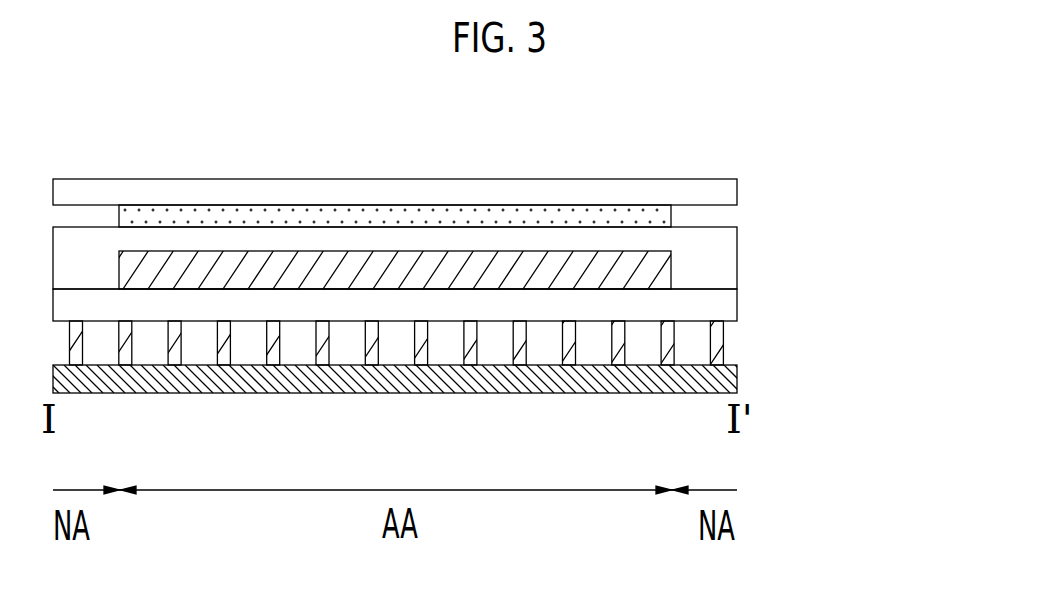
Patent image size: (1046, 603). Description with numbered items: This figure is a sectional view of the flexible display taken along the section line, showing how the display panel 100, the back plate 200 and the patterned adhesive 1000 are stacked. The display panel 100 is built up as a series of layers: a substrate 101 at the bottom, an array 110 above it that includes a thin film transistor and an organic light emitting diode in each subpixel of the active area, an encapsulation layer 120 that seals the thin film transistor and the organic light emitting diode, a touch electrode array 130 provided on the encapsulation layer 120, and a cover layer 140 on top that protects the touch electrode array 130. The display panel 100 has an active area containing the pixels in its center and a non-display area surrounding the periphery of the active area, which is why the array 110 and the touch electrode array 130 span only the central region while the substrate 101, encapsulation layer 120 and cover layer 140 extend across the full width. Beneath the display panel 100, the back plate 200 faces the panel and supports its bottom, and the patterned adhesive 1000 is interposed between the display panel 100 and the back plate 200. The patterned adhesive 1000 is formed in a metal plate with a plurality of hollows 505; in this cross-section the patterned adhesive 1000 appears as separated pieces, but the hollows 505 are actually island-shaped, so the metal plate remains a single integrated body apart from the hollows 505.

The display panel 100 is at (508, 226).
The cover layer 140 is at (737, 191).
The touch electrode array 130 is at (671, 217).
The encapsulation layer 120 is at (712, 239).
The array 110 is at (660, 269).
The substrate 101 is at (458, 304).
The patterned adhesive 1000 is at (722, 343).
The back plate 200 is at (737, 377).
The hollows 505 is at (587, 353).